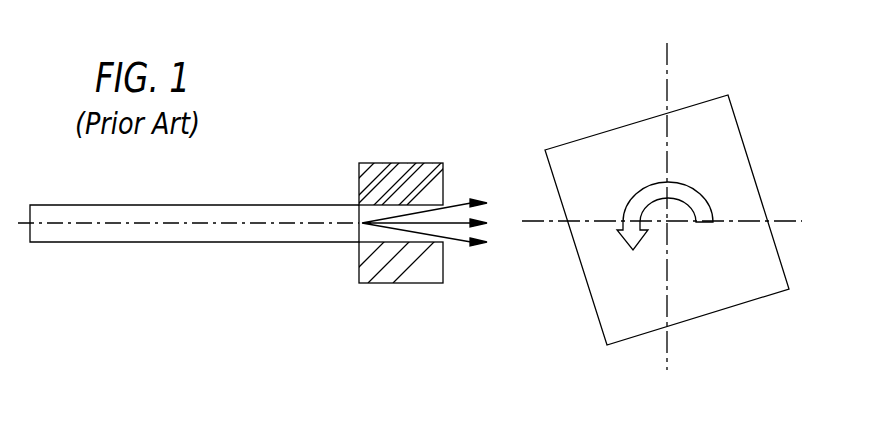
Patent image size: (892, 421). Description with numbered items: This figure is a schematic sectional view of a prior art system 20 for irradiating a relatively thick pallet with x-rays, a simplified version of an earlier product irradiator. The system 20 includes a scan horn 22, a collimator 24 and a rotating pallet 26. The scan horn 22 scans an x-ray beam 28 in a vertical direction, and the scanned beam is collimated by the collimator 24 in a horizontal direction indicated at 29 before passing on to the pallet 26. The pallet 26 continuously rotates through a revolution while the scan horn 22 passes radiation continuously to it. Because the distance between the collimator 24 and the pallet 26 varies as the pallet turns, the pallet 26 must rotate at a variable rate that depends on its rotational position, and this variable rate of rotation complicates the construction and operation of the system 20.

The prior art irradiation system 20 is at (521, 112).
The scan horn 22 is at (287, 205).
The collimator 24 is at (415, 163).
The rotating pallet 26 is at (739, 130).
The x-ray beam 28 is at (222, 226).
The horizontal collimation direction 29 is at (458, 244).